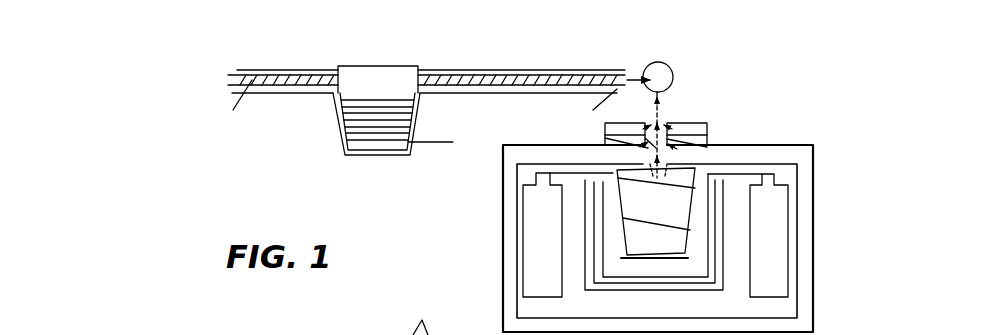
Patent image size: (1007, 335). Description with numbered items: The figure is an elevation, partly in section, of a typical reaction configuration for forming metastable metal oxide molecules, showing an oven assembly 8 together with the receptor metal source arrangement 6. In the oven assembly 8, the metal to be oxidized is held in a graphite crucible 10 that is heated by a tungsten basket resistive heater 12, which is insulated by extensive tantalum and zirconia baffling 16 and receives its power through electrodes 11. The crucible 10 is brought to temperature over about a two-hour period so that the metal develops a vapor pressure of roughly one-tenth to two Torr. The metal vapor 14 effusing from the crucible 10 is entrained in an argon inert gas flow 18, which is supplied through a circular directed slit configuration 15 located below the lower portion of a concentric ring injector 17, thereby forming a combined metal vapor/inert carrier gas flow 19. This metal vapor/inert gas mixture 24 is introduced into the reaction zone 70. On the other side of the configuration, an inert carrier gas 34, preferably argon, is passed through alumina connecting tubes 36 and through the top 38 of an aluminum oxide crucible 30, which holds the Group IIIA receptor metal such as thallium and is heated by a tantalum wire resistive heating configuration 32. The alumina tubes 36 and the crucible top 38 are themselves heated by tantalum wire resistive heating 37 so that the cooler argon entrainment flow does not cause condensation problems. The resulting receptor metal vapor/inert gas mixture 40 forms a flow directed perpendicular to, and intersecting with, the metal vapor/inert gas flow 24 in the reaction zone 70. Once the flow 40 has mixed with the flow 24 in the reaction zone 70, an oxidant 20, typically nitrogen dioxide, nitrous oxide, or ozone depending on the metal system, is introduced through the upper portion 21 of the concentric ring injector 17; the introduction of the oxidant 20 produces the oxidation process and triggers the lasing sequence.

The material feed assembly 6 is at (307, 37).
The oven assembly 8 is at (478, 279).
The graphite crucible 10 is at (653, 246).
The electrodes 11 is at (550, 273).
The tungsten basket resistive heater 12 is at (666, 259).
The metal vapor 14 is at (651, 181).
The circular directed slit configuration 15 is at (605, 136).
The tantalum and zirconia baffling 16 is at (592, 284).
The concentric ring injector 17 is at (730, 133).
The inert gas flow 18 is at (636, 147).
The combined metal vapor/inert carrier gas flow 19 is at (656, 214).
The oxidant 20 is at (664, 121).
The upper portion of the concentric ring injector 21 is at (698, 123).
The metal vapor/inert gas mixture 24 is at (661, 100).
The aluminum oxide crucible 30 is at (362, 146).
The tantalum wire resistive heating configuration 32 is at (453, 142).
The inert carrier gas 34 is at (214, 82).
The alumina connecting tubes 36 is at (228, 74).
The tantalum wire resistive heating 37 is at (233, 110).
The top of the crucible 38 is at (372, 67).
The metal vapor/inert gas mixture flow 40 is at (628, 72).
The reaction zone 70 is at (669, 60).